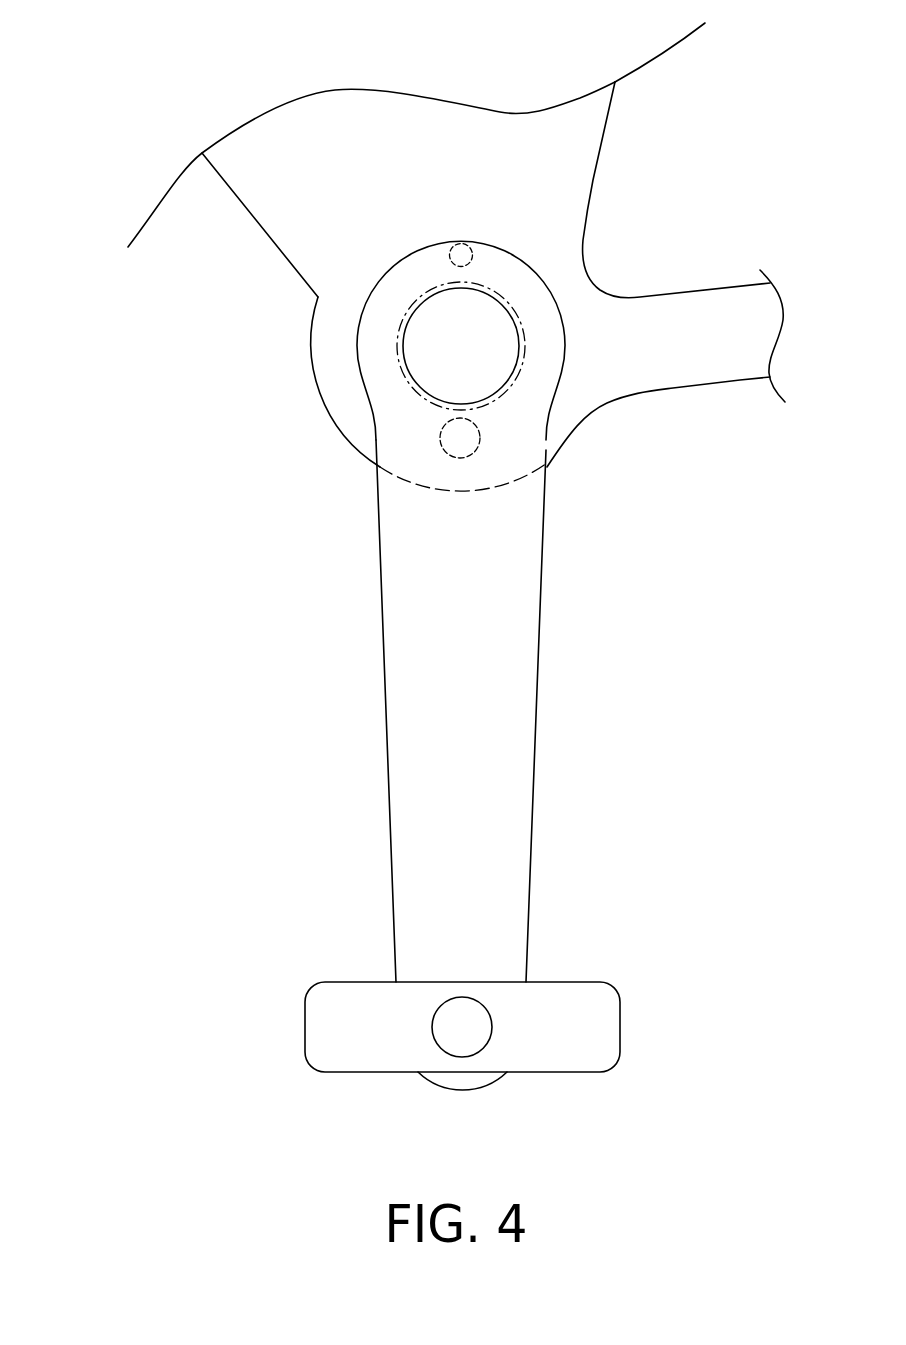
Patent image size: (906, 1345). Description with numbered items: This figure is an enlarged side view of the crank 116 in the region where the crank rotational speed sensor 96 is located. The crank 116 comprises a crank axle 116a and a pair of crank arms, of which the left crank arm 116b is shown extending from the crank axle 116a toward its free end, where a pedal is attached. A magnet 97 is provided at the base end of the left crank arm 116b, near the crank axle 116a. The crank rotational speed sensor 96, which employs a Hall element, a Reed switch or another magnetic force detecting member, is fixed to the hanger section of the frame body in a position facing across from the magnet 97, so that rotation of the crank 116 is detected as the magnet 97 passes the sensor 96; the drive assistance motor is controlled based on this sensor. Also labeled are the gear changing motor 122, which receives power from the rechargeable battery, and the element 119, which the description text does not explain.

The crank rotational speed sensor 96 is at (460, 258).
The magnet 97 is at (443, 448).
The crank 116 is at (540, 268).
The crank axle 116a is at (435, 323).
The left crank arm 116b is at (397, 812).
The connecting block 119 is at (313, 1055).
The gear changing motor 122 is at (316, 360).